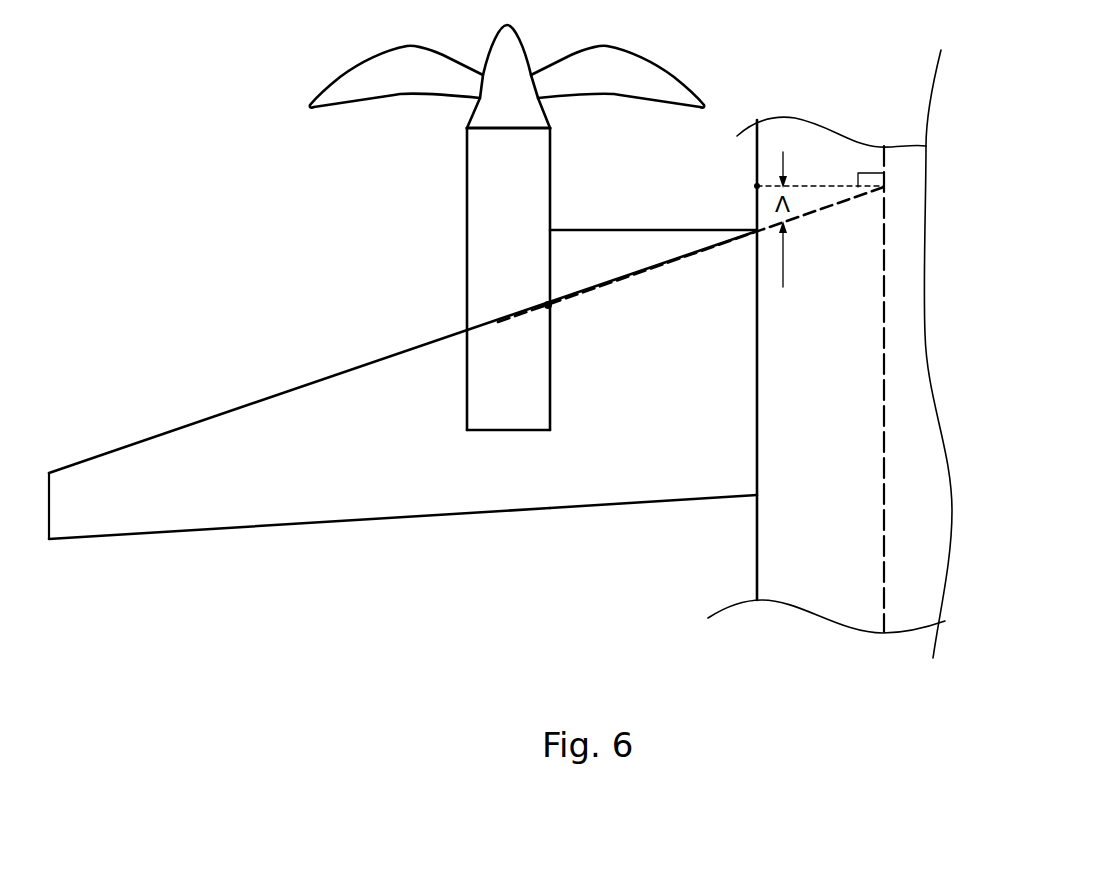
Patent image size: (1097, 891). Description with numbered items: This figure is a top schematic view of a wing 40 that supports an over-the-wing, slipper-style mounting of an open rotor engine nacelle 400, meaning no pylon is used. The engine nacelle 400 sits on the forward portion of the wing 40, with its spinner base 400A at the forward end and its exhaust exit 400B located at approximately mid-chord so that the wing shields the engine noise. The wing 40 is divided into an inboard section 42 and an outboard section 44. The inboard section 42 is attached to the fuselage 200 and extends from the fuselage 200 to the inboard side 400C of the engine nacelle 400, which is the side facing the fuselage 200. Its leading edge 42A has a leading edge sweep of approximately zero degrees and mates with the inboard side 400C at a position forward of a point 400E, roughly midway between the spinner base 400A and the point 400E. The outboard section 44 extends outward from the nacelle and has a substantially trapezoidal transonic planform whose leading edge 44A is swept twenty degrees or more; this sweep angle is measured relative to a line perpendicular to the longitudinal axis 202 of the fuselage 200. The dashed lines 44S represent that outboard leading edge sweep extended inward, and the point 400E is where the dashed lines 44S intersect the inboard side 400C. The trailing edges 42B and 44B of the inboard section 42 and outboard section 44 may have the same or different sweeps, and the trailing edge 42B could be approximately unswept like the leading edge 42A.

The wing 40 is at (272, 260).
The inboard section 42 is at (612, 424).
The leading edge 42A is at (665, 228).
The trailing edge 42B is at (635, 501).
The outboard section 44 is at (242, 498).
The leading edge 44A is at (257, 405).
The trailing edge 44B is at (385, 519).
The dashed lines 44S is at (503, 320).
The engine nacelle 400 is at (495, 217).
The spinner base 400A is at (497, 130).
The exhaust exit 400B is at (503, 432).
The inboard side 400C is at (552, 357).
The point 400E is at (551, 308).
The fuselage 200 is at (755, 530).
The longitudinal axis 202 is at (875, 580).